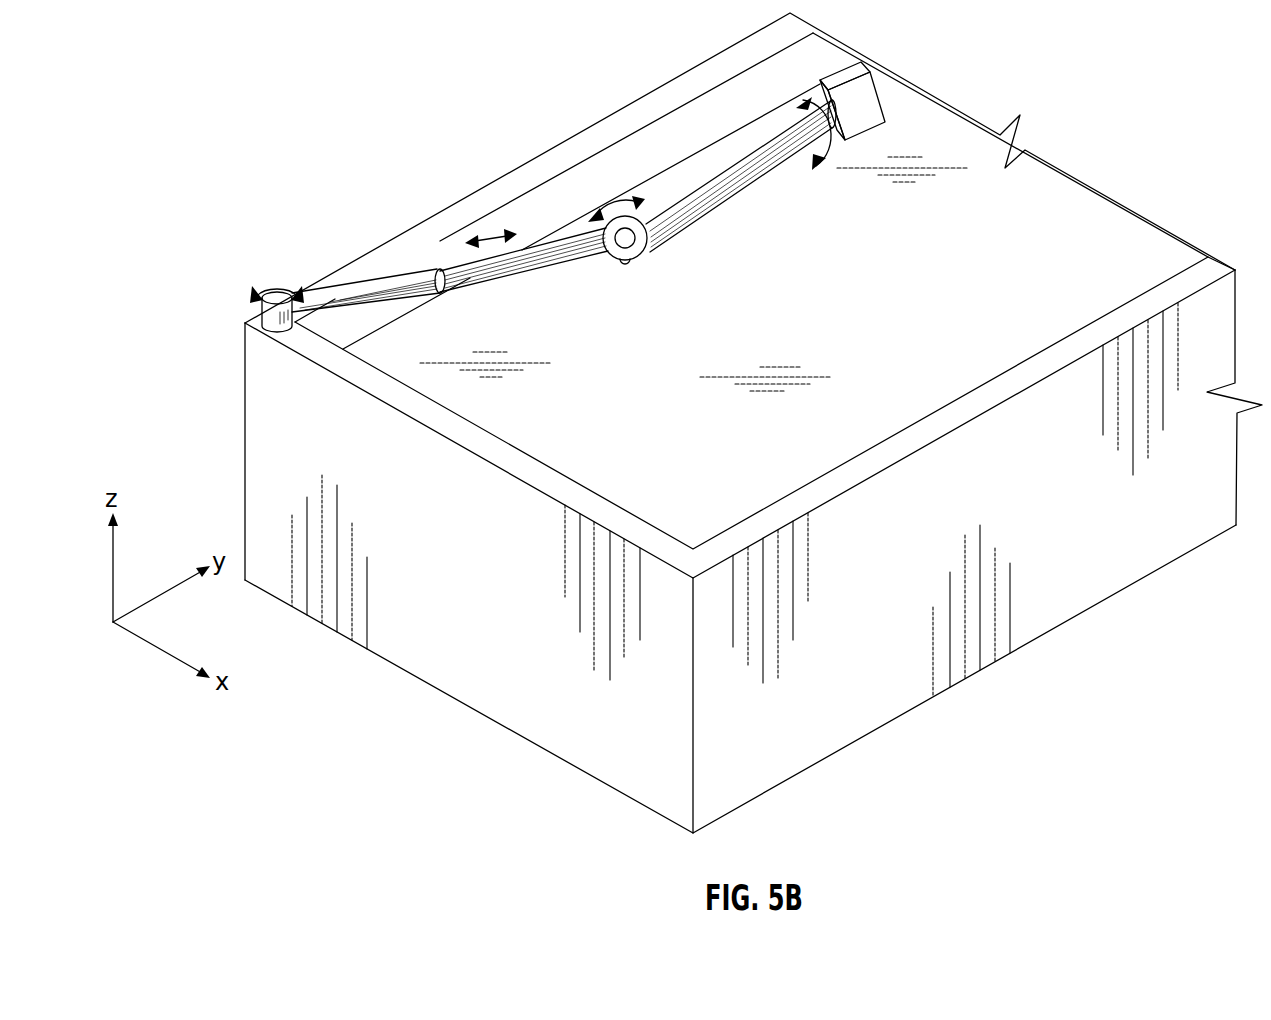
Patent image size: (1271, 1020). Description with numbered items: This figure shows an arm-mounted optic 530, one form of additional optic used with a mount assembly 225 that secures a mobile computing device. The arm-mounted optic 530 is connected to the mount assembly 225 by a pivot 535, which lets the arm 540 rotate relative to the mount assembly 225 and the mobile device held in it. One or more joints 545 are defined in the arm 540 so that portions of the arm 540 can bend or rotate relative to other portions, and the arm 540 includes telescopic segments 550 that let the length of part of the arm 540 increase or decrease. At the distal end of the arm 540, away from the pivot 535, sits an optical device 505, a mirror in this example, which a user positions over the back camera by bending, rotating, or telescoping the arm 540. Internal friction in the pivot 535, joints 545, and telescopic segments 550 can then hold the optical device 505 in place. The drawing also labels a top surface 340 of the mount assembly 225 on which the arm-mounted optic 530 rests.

The mount assembly 225 is at (915, 665).
The top surface 340 is at (1040, 205).
The optical device 505 is at (852, 103).
The arm-mounted optic 530 is at (554, 189).
The pivot 535 is at (262, 300).
The arm 540 is at (732, 189).
The joints 545 is at (624, 262).
The telescopic segments 550 is at (502, 274).